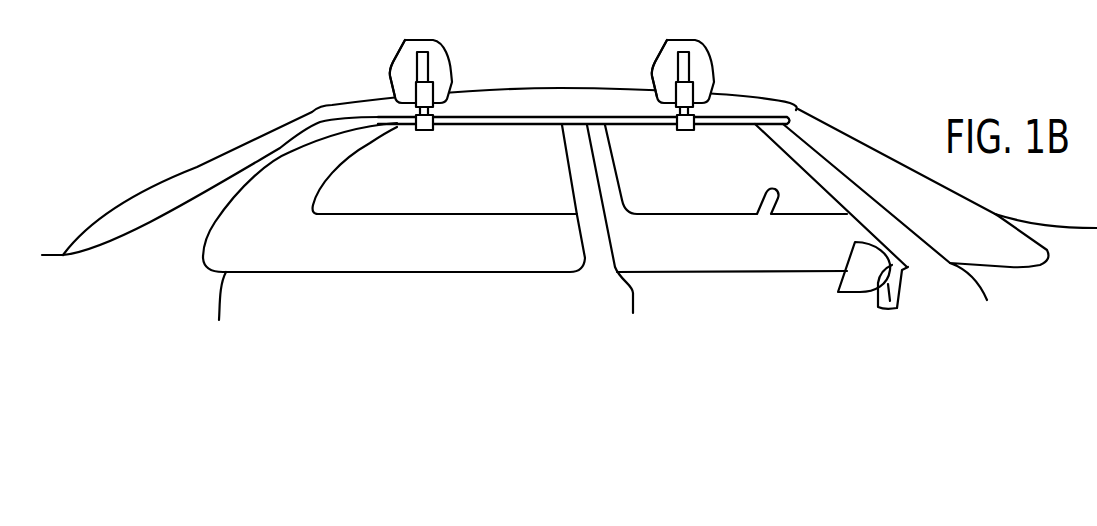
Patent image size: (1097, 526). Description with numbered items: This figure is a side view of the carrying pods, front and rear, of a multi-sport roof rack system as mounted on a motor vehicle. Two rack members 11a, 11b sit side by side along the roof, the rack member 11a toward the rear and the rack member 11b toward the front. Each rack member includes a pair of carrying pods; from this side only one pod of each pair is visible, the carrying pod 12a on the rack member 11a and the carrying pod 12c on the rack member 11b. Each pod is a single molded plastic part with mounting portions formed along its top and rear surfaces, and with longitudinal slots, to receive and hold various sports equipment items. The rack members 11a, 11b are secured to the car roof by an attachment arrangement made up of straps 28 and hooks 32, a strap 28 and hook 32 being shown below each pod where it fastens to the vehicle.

The rack member 11a is at (688, 40).
The rack member 11b is at (418, 40).
The carrying pod 12a is at (657, 59).
The carrying pod 12c is at (396, 65).
The strap 28 is at (429, 66).
The hook 32 is at (425, 130).